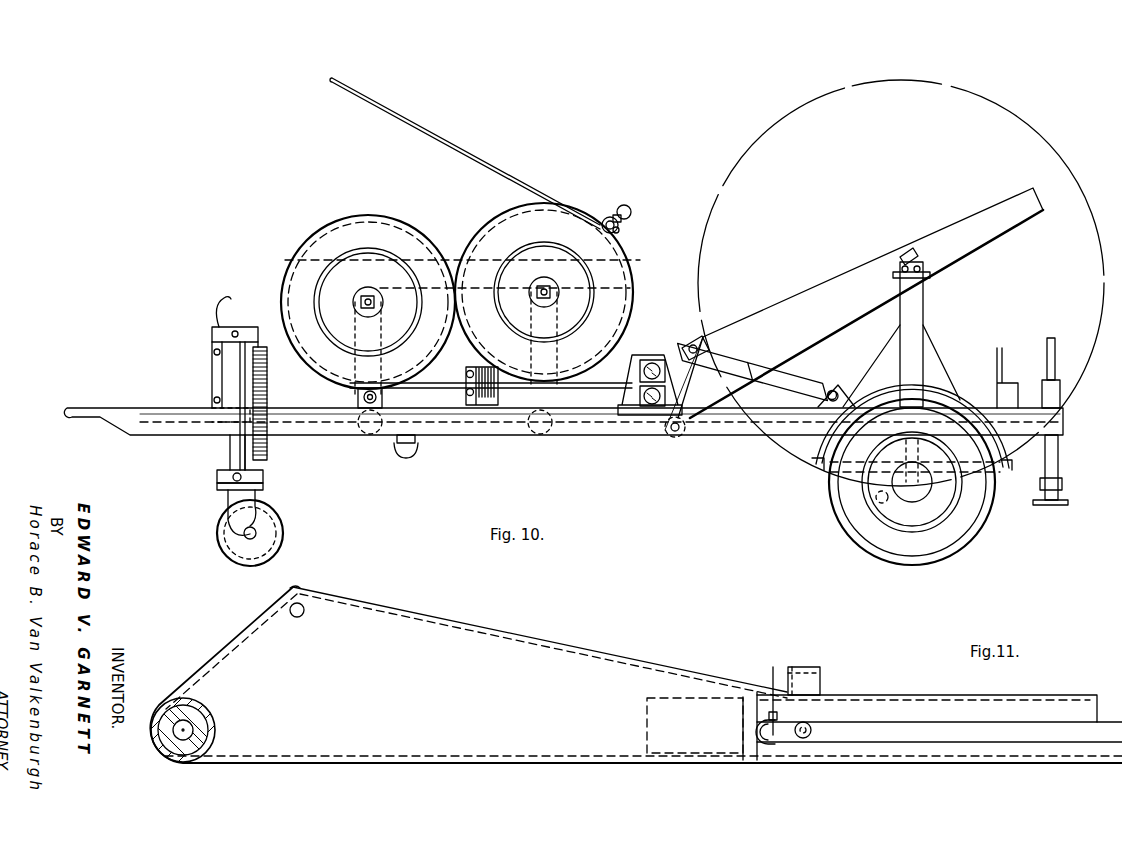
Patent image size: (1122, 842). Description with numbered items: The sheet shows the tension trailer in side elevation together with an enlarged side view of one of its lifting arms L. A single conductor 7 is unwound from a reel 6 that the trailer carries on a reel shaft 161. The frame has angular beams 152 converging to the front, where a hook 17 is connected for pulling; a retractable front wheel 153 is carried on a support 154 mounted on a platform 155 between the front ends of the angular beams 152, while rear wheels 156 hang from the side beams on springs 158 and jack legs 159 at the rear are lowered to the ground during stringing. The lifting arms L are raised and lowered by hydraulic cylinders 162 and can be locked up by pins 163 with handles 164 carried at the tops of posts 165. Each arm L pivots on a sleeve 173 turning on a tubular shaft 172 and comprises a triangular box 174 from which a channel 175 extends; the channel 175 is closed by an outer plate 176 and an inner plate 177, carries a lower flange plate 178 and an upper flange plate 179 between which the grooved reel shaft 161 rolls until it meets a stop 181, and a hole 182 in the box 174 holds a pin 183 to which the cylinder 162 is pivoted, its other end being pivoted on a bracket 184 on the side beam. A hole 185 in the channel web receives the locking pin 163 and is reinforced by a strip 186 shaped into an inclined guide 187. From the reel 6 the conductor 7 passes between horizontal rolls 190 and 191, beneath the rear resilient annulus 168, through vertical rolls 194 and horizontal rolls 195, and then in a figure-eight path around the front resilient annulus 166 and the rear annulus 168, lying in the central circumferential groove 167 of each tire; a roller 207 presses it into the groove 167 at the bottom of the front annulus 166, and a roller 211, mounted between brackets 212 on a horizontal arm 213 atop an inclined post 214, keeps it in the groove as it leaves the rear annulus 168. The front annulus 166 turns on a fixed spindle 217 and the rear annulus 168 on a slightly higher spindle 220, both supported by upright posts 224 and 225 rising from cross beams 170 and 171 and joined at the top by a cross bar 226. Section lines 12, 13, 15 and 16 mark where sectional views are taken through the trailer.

In FIG. 10, the reel 6 is at (974, 90).
In FIG. 10, the conductor 7 is at (404, 120).
In FIG. 10, the section line 12 is at (628, 329).
In FIG. 10, the section line 13 is at (510, 470).
In FIG. 10, the section line 15 is at (423, 395).
In FIG. 10, the section line 16 is at (418, 185).
In FIG. 10, the hook 17 is at (64, 411).
In FIG. 10, the angular beams 152 is at (173, 437).
In FIG. 10, the retractable front wheel 153 is at (239, 561).
In FIG. 10, the support 154 is at (163, 408).
In FIG. 10, the platform 155 is at (221, 438).
In FIG. 10, the rear wheels 156 is at (880, 541).
In FIG. 10, the springs 158 is at (818, 470).
In FIG. 10, the jack legs 159 is at (1069, 474).
In FIG. 10, the reel shaft 161 is at (895, 283).
In FIG. 10, the hydraulic cylinders 162 is at (762, 366).
In FIG. 10, the pins 163 is at (931, 272).
In FIG. 10, the handles 164 is at (931, 279).
In FIG. 10, the posts 165 is at (924, 310).
In FIG. 10, the front resilient annulus 166 is at (326, 248).
In FIG. 10, the central circumferential groove 167 is at (291, 268).
In FIG. 10, the rear resilient annulus 168 is at (490, 228).
In FIG. 10, the cross beam 170 is at (358, 421).
In FIG. 10, the cross beam 171 is at (554, 421).
In FIG. 10, the shaft 172 is at (683, 440).
In FIG. 11, the shaft 172 is at (194, 732).
In FIG. 11, the sleeve 173 is at (210, 712).
In FIG. 11, the triangular box 174 is at (446, 684).
In FIG. 11, the channel 175 is at (646, 732).
In FIG. 11, the outer plate 176 is at (1118, 732).
In FIG. 11, the inner plate 177 is at (743, 732).
In FIG. 11, the lower flange plate 178 is at (983, 756).
In FIG. 11, the upper flange plate 179 is at (1024, 705).
In FIG. 11, the stop 181 is at (775, 712).
In FIG. 11, the hole 182 is at (302, 616).
In FIG. 10, the pin 183 is at (703, 340).
In FIG. 10, the bracket 184 is at (847, 392).
In FIG. 11, the hole 185 is at (812, 730).
In FIG. 11, the strip 186 is at (886, 752).
In FIG. 10, the inclined guide 187 is at (904, 256).
In FIG. 11, the inclined guide 187 is at (818, 680).
In FIG. 10, the horizontal roll 190 is at (656, 353).
In FIG. 10, the horizontal roll 191 is at (632, 396).
In FIG. 10, the vertical rolls 194 is at (503, 400).
In FIG. 10, the horizontal rolls 195 is at (466, 374).
In FIG. 10, the roller 207 is at (402, 408).
In FIG. 10, the roller 211 is at (606, 217).
In FIG. 10, the brackets 212 is at (618, 213).
In FIG. 10, the horizontal arm 213 is at (632, 212).
In FIG. 10, the post 214 is at (624, 226).
In FIG. 10, the spindle 217 is at (366, 306).
In FIG. 10, the spindle 220 is at (552, 290).
In FIG. 10, the upright post 224 is at (355, 333).
In FIG. 10, the upright post 225 is at (550, 361).
In FIG. 10, the cross bar 226 is at (455, 268).
In FIG. 10, the lifting arms L is at (1002, 212).
In FIG. 11, the lifting arms L is at (650, 660).